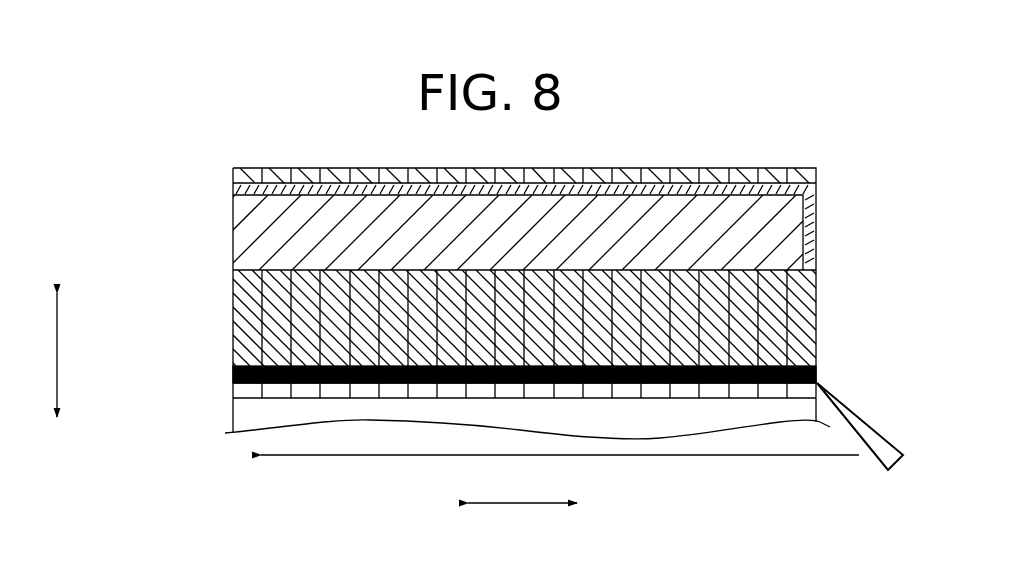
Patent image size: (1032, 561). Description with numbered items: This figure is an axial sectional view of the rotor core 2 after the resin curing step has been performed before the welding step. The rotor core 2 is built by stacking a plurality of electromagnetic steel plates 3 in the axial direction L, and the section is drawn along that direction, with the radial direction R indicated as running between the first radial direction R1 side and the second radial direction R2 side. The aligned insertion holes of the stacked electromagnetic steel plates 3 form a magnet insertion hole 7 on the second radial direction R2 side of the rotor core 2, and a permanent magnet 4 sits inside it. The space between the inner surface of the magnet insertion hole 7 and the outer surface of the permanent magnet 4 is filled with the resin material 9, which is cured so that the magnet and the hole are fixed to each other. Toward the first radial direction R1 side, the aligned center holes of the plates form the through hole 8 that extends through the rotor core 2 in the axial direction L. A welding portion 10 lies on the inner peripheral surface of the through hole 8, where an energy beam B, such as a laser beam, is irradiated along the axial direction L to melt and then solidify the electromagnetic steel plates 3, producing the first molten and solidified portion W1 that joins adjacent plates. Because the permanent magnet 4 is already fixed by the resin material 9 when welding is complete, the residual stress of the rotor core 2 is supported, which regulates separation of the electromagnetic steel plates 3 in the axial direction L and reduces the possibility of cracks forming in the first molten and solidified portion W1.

The rotor core 2 is at (270, 160).
The electromagnetic steel plate 3 is at (742, 168).
The magnet insertion hole 7 is at (242, 197).
The permanent magnet 4 is at (242, 248).
The resin material 9 is at (816, 215).
The through hole 8 is at (252, 398).
The welding portion 10 is at (650, 396).
The first molten and solidified portion W1 is at (817, 372).
The energy beam B is at (872, 425).
The axial direction L is at (560, 479).
The radial direction R is at (76, 355).
The first radial direction R1 is at (59, 432).
The second radial direction R2 is at (59, 280).